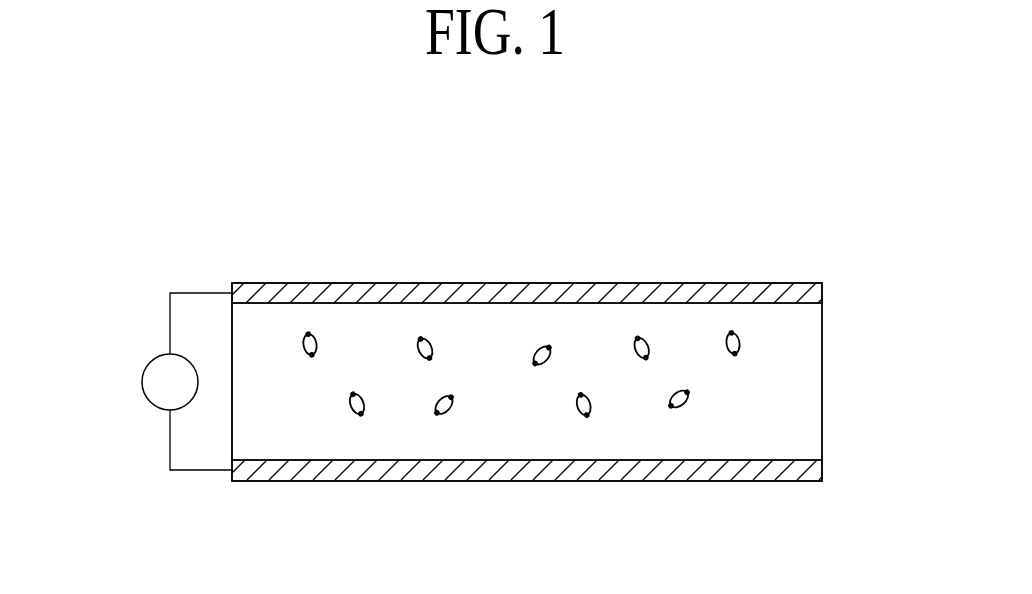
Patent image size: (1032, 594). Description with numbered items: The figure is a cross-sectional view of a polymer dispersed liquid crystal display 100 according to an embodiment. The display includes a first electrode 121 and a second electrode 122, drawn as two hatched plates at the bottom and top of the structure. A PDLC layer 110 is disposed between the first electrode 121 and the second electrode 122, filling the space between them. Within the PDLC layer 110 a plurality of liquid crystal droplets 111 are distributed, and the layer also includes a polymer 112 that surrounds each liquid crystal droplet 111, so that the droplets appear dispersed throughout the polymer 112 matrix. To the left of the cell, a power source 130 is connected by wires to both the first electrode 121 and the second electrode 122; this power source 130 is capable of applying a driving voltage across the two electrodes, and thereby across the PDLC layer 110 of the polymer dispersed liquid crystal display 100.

The polymer dispersed liquid crystal display 100 is at (104, 219).
The PDLC layer 110 is at (805, 383).
The liquid crystal droplet 111 is at (361, 417).
The polymer 112 is at (422, 430).
The first electrode 121 is at (805, 470).
The second electrode 122 is at (808, 292).
The power source 130 is at (142, 383).